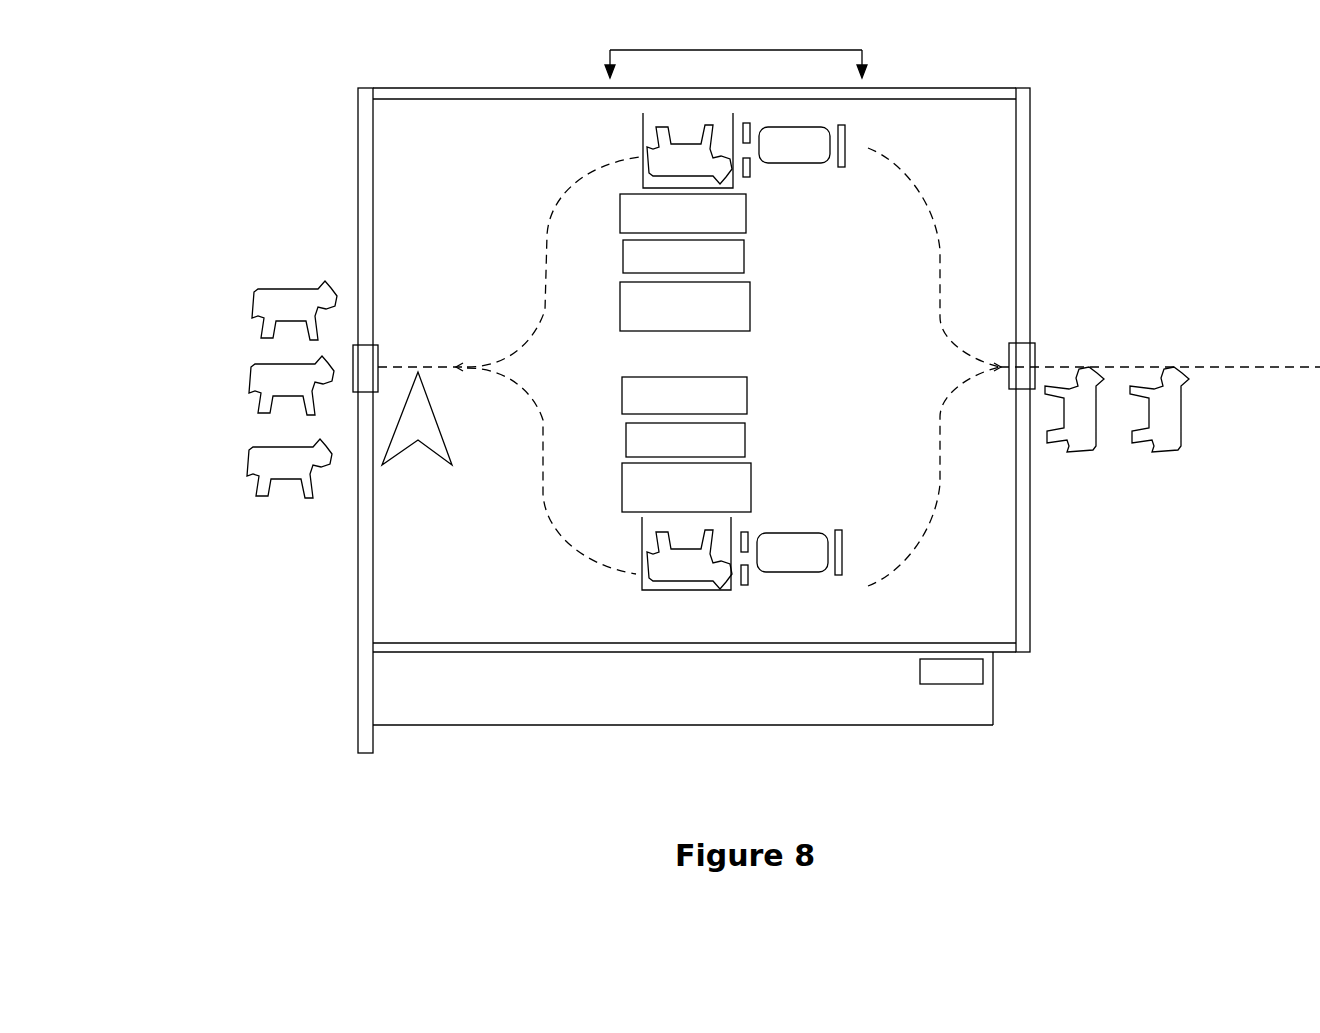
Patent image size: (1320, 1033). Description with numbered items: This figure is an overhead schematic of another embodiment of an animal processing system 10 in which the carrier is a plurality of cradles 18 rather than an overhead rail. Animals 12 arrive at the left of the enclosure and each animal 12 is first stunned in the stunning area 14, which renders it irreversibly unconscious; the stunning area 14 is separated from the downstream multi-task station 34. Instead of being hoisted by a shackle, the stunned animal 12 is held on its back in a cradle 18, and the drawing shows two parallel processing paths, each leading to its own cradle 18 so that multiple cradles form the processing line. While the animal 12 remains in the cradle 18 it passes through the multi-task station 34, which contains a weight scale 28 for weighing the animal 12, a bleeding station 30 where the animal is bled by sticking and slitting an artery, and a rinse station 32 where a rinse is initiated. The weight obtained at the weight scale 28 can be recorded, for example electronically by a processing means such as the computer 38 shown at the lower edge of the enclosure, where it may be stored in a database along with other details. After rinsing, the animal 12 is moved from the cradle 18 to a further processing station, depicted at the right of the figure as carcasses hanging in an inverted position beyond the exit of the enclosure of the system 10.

The animal processing system 10 is at (1052, 598).
The animal 12 is at (286, 300).
The stunning area 14 is at (418, 335).
The cradle 18 is at (643, 138).
The weight scale 28 is at (746, 213).
The bleeding station 30 is at (744, 256).
The rinse station 32 is at (802, 150).
The multi-task station 34 is at (730, 50).
The controller 38 is at (947, 685).